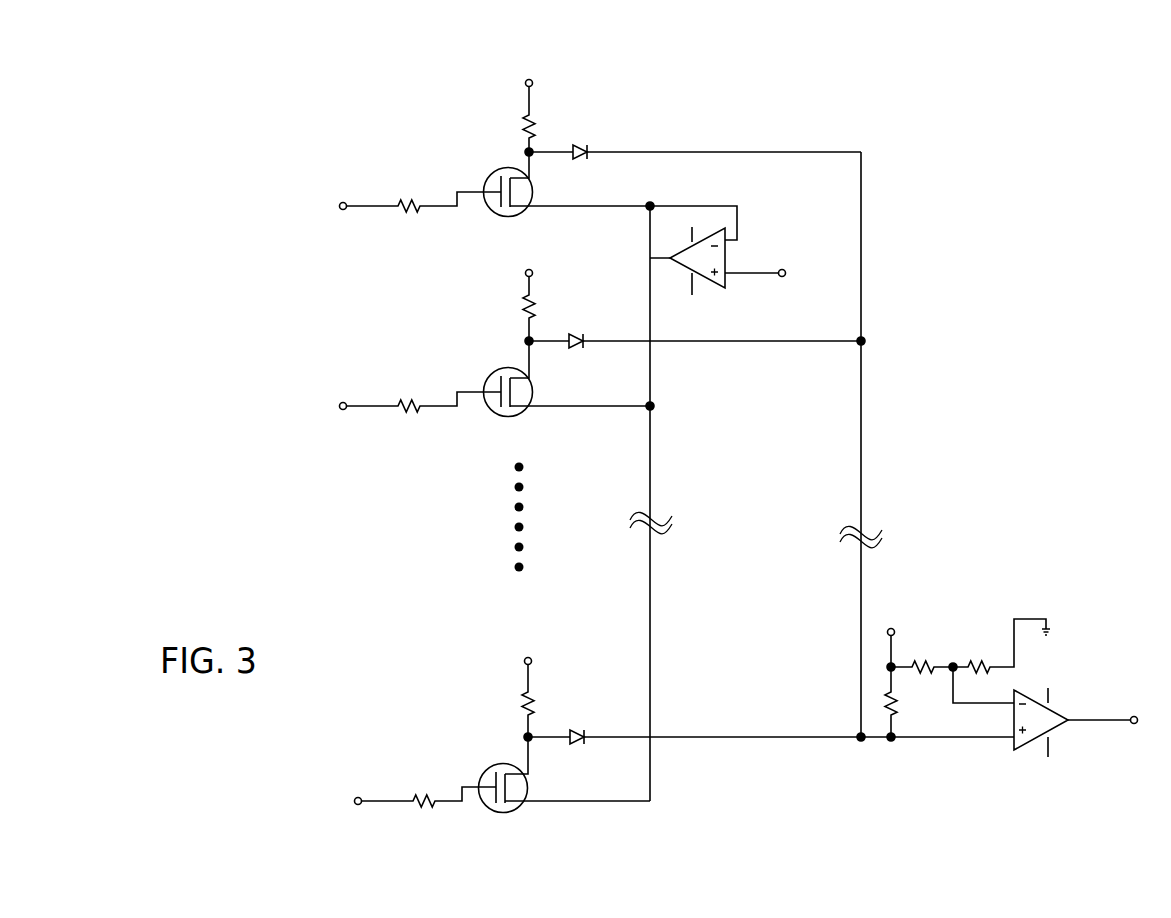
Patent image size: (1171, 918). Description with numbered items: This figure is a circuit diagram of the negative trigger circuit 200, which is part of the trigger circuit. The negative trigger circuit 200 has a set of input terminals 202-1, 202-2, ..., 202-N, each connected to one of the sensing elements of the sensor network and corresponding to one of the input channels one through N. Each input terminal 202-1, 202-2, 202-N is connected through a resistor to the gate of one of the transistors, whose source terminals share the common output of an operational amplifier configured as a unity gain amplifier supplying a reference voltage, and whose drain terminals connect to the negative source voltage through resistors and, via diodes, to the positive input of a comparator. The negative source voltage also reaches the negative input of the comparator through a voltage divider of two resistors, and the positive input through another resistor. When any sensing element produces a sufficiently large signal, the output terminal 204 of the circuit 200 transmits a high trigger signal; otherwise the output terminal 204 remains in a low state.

The negative trigger circuit 200 is at (807, 803).
The input terminal 202-1 is at (343, 210).
The input terminal 202-2 is at (343, 410).
The input terminal 202-N is at (358, 805).
The output terminal 204 is at (1134, 724).